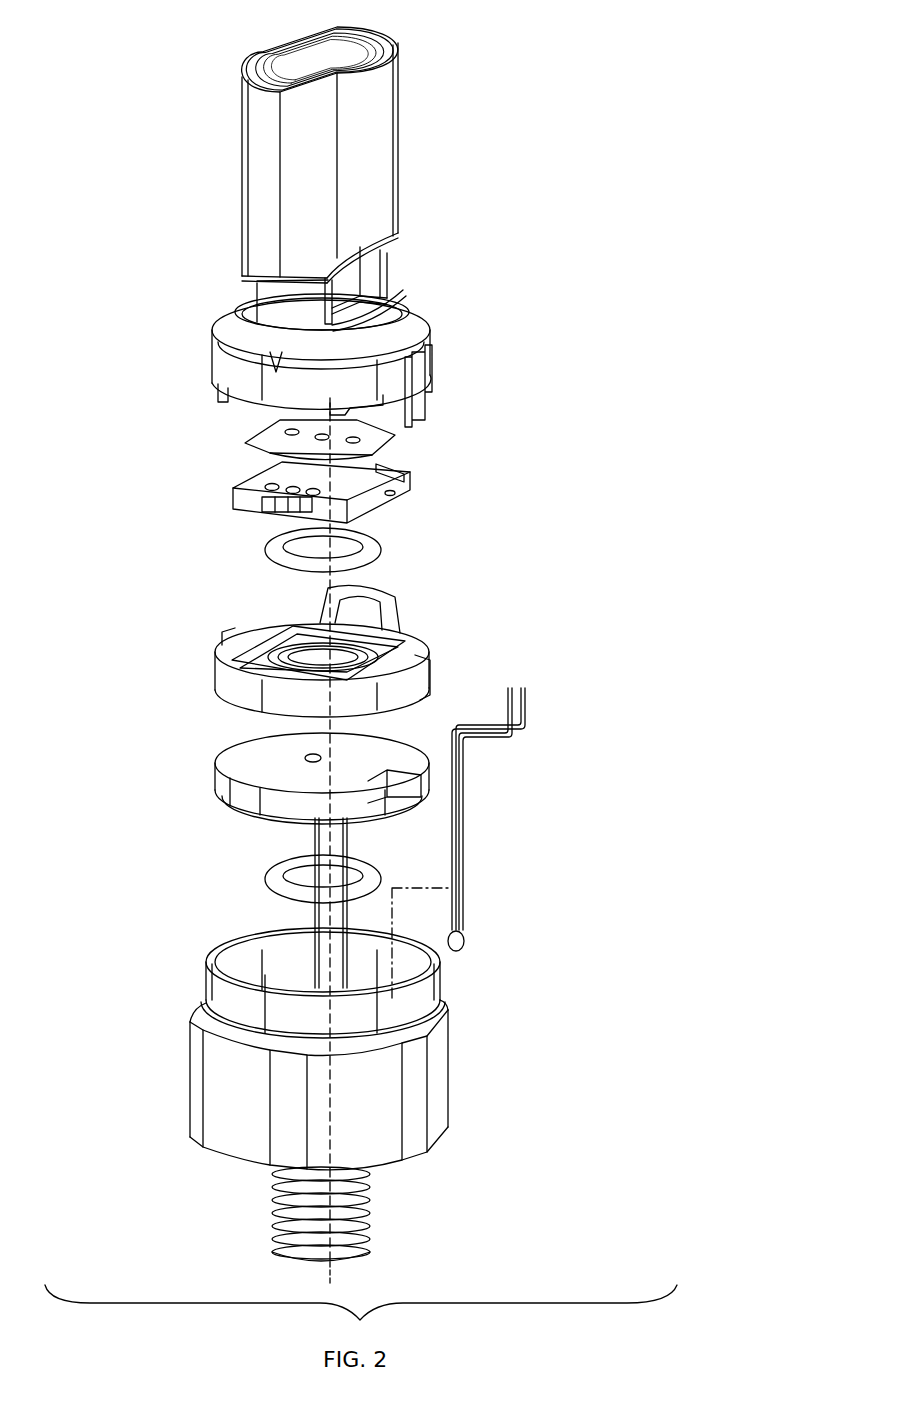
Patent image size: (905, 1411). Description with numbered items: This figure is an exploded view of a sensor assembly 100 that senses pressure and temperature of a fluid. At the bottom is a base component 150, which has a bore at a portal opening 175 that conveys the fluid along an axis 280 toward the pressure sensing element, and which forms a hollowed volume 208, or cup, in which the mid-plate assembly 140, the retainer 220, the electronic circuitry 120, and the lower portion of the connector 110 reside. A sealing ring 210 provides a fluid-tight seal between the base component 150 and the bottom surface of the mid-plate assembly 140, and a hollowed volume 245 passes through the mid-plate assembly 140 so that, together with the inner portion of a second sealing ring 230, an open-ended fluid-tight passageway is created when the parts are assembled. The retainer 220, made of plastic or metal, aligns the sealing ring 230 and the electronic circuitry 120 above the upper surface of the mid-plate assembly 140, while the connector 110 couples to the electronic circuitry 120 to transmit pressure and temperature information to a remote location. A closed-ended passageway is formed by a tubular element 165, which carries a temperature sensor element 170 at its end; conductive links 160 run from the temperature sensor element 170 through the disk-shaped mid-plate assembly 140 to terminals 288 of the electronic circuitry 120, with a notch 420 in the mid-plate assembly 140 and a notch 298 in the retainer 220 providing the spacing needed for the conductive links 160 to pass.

The sensor assembly 100 is at (198, 162).
The connector 110 is at (435, 25).
The electronic circuitry 120 is at (230, 492).
The terminals 288 is at (387, 497).
The sealing ring 230 is at (381, 554).
The retainer 220 is at (214, 680).
The notch 298 is at (430, 705).
The hollowed volume 245 is at (285, 752).
The notch 420 is at (408, 787).
The mid-plate assembly 140 is at (258, 774).
The conductive links 160 is at (458, 832).
The sealing ring 210 is at (263, 882).
The tubular element 165 is at (318, 916).
The hollowed volume 208 is at (232, 962).
The temperature sensor element 170 is at (465, 945).
The base component 150 is at (447, 1076).
The portal opening 175 is at (258, 1221).
The axis 280 is at (332, 1278).